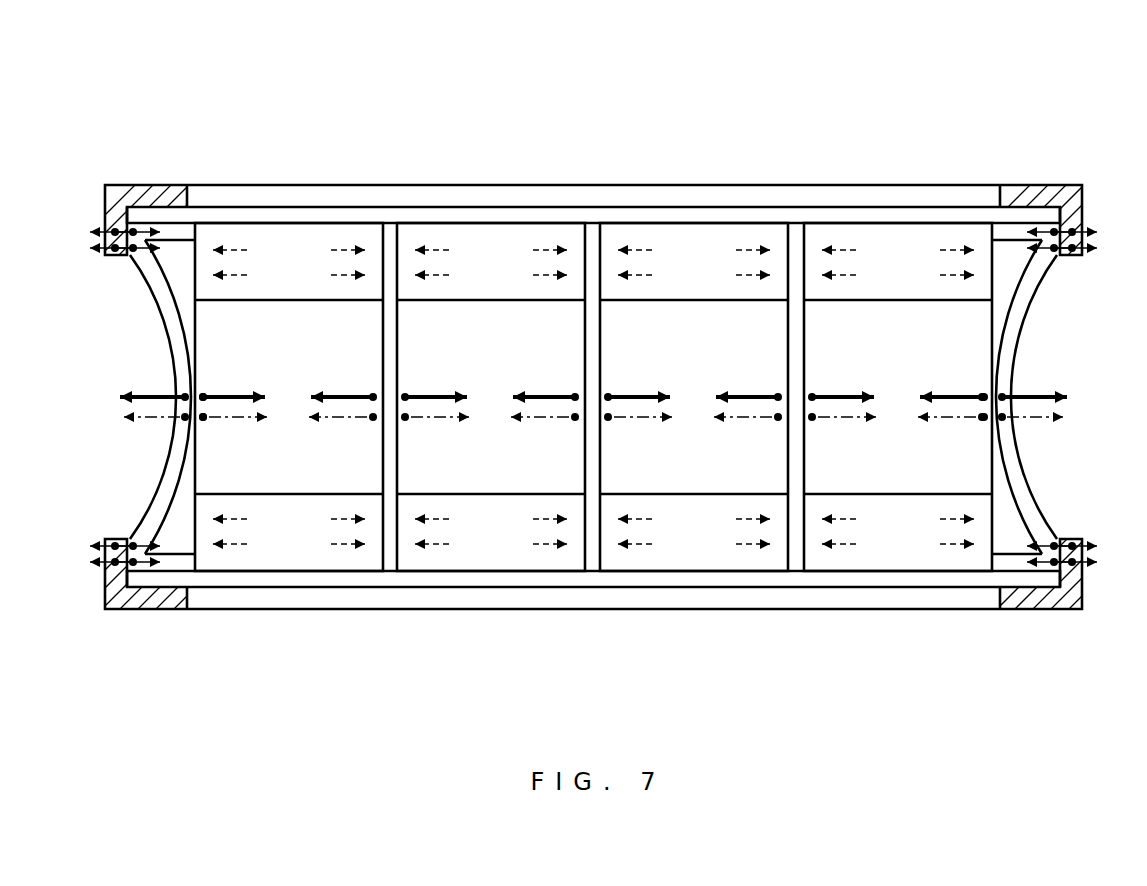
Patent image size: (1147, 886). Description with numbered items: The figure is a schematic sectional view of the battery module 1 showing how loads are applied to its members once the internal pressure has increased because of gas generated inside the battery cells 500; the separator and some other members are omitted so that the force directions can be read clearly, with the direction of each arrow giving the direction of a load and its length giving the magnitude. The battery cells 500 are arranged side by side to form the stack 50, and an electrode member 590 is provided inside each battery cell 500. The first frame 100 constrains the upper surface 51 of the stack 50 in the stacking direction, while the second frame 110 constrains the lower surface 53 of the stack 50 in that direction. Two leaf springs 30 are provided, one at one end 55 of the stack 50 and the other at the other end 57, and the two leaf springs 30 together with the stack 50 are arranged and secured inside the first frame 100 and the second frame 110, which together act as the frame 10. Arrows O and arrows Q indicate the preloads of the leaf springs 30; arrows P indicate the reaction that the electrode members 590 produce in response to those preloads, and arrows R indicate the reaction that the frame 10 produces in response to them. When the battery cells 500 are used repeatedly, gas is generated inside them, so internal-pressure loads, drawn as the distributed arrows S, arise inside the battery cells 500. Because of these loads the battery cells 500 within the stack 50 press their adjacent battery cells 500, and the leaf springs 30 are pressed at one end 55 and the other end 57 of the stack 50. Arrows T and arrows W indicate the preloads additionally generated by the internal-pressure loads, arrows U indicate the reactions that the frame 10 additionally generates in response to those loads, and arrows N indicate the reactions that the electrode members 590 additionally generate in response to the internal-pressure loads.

The battery module 1 is at (1048, 98).
The frame 10 is at (783, 98).
The stack 50 is at (368, 146).
The upper surface 51 is at (564, 221).
The lower surface 53 is at (701, 574).
The one end 55 is at (997, 303).
The other end 57 is at (182, 306).
The leaf spring 30 is at (174, 338).
The first frame 100 is at (1006, 181).
The second frame 110 is at (642, 611).
The battery cell 500 is at (229, 220).
The electrode member 590 is at (320, 298).
The arrows P is at (142, 394).
The arrows N is at (138, 418).
The arrows O is at (238, 394).
The arrows T is at (244, 420).
The arrows S is at (353, 555).
The arrows Q is at (108, 228).
The arrows R is at (139, 228).
The arrows W is at (110, 253).
The arrows U is at (133, 253).